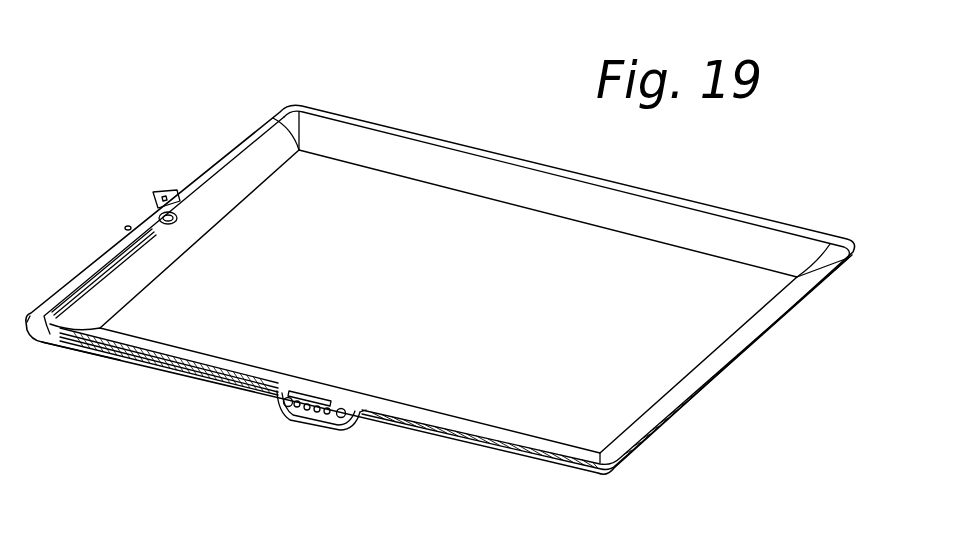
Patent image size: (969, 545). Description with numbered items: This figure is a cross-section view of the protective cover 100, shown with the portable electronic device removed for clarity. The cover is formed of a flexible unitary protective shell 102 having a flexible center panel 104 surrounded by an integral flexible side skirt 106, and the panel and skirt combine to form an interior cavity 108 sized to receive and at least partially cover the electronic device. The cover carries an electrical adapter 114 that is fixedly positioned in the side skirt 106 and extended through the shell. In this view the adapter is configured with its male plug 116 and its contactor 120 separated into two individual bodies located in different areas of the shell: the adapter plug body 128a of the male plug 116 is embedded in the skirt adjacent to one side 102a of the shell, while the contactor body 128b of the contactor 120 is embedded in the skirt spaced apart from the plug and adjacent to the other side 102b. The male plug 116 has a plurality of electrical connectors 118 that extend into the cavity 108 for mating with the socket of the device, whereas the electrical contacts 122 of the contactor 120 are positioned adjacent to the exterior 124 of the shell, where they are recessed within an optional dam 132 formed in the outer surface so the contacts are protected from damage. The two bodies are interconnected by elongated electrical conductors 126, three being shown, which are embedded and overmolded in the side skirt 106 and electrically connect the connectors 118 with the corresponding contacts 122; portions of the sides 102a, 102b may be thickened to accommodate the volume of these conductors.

The protective cover 100 is at (471, 107).
The protective shell 102 is at (757, 349).
The side of protective shell 102a is at (70, 273).
The side of protective shell 102b is at (76, 355).
The center panel 104 is at (643, 377).
The side skirt 106 is at (218, 196).
The interior cavity 108 is at (467, 301).
The adapter 114 is at (338, 430).
The male plug 116 is at (165, 222).
The electrical connectors 118 is at (178, 190).
The contactor 120 is at (320, 430).
The electrical contacts 122 is at (300, 422).
The exterior (outer surface) of shell 124 is at (611, 379).
The electrical conductors 126 is at (123, 227).
The adapter plug body 128a is at (117, 216).
The contactor body 128b is at (277, 393).
The dam 132 is at (350, 430).